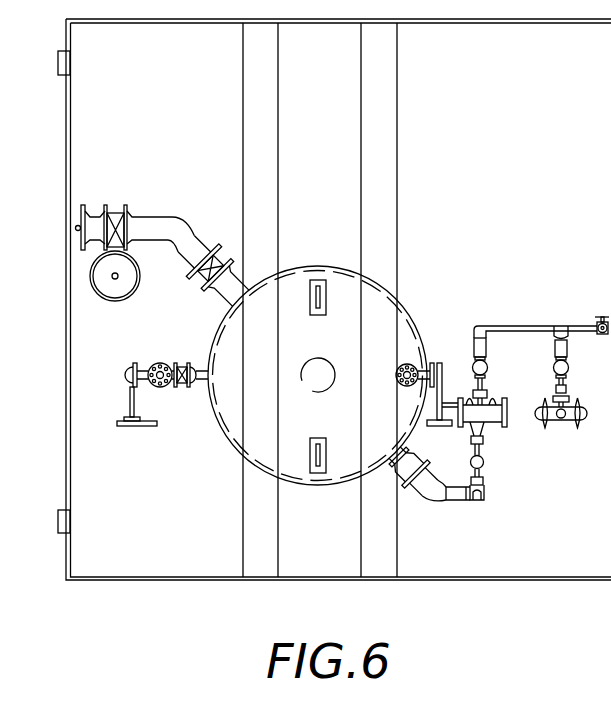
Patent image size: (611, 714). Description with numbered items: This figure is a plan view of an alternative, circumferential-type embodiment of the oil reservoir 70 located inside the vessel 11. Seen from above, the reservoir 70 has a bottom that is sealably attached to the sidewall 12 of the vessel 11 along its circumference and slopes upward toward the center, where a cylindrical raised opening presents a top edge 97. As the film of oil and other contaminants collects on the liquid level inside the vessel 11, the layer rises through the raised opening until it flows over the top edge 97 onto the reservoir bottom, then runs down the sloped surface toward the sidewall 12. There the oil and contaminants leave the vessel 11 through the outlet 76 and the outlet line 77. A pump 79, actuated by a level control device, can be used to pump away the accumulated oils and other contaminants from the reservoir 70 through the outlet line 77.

The vessel 11 is at (422, 291).
The sidewall 12 is at (229, 442).
The reservoir 70 is at (381, 338).
The top edge 97 is at (308, 389).
The outlet 76 is at (397, 455).
The outlet line 77 is at (428, 496).
The pump 79 is at (512, 415).